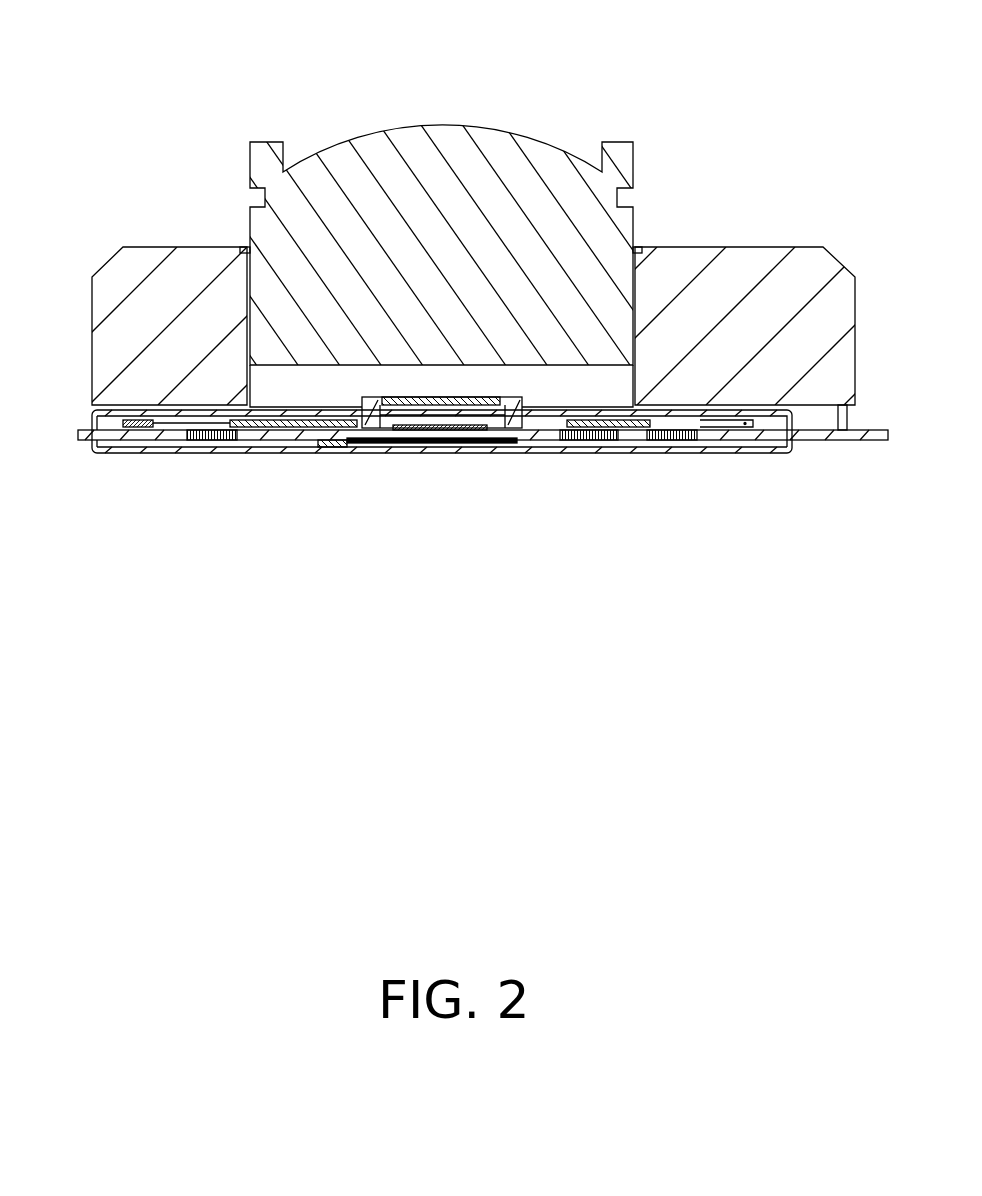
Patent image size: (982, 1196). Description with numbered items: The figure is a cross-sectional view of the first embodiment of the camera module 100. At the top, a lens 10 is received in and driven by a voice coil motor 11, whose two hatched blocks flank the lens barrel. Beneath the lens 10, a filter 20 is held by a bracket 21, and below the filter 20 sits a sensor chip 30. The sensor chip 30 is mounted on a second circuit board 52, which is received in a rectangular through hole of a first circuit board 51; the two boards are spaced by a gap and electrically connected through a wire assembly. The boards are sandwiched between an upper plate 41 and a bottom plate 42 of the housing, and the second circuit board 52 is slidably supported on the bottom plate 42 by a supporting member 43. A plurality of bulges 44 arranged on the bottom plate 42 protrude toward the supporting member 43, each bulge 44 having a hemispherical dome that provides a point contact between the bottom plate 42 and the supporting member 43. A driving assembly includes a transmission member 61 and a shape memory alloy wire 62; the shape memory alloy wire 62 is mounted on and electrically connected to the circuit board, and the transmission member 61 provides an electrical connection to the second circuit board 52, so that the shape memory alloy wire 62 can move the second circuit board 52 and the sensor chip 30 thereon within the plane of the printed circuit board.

The camera module 100 is at (482, 47).
The lens 10 is at (258, 162).
The voice coil motor 11 is at (98, 348).
The filter 20 is at (482, 400).
The bracket 21 is at (517, 415).
The sensor chip 30 is at (445, 430).
The upper plate 41 is at (92, 422).
The bottom plate 42 is at (92, 445).
The supporting member 43 is at (330, 440).
The bulges 44 is at (345, 440).
The first circuit board 51 is at (145, 428).
The second circuit board 52 is at (416, 440).
The transmission member 61 is at (182, 426).
The shape memory alloy wire 62 is at (247, 427).